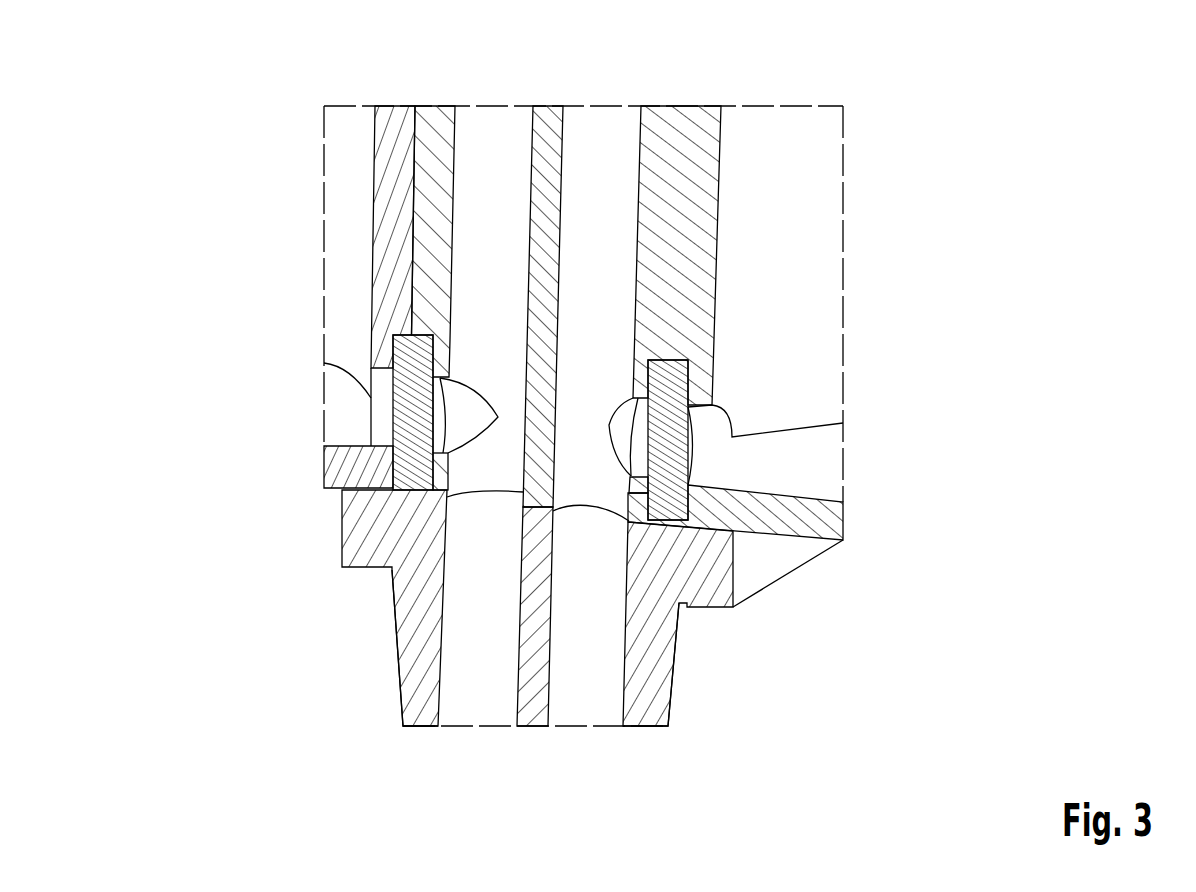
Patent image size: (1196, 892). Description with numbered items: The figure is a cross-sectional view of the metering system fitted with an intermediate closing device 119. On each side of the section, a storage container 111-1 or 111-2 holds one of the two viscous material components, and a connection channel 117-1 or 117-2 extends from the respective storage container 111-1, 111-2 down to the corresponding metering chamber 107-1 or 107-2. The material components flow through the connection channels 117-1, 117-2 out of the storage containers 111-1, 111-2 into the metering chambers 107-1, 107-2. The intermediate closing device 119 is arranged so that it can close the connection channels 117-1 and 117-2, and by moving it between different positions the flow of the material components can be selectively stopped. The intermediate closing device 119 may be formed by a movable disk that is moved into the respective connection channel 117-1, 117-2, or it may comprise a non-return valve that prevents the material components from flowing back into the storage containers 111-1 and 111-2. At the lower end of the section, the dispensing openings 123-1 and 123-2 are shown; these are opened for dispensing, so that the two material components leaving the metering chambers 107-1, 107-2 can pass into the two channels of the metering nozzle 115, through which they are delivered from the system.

The metering chamber 107-1 is at (602, 140).
The metering chamber 107-2 is at (487, 140).
The storage container 111-1 is at (818, 360).
The storage container 111-2 is at (357, 136).
The metering nozzle 115 is at (422, 703).
The connection channel 117-1 is at (818, 467).
The connection channel 117-2 is at (357, 431).
The intermediate closing device 119 is at (407, 415).
The dispensing opening 123-1 is at (590, 503).
The dispensing opening 123-2 is at (498, 492).